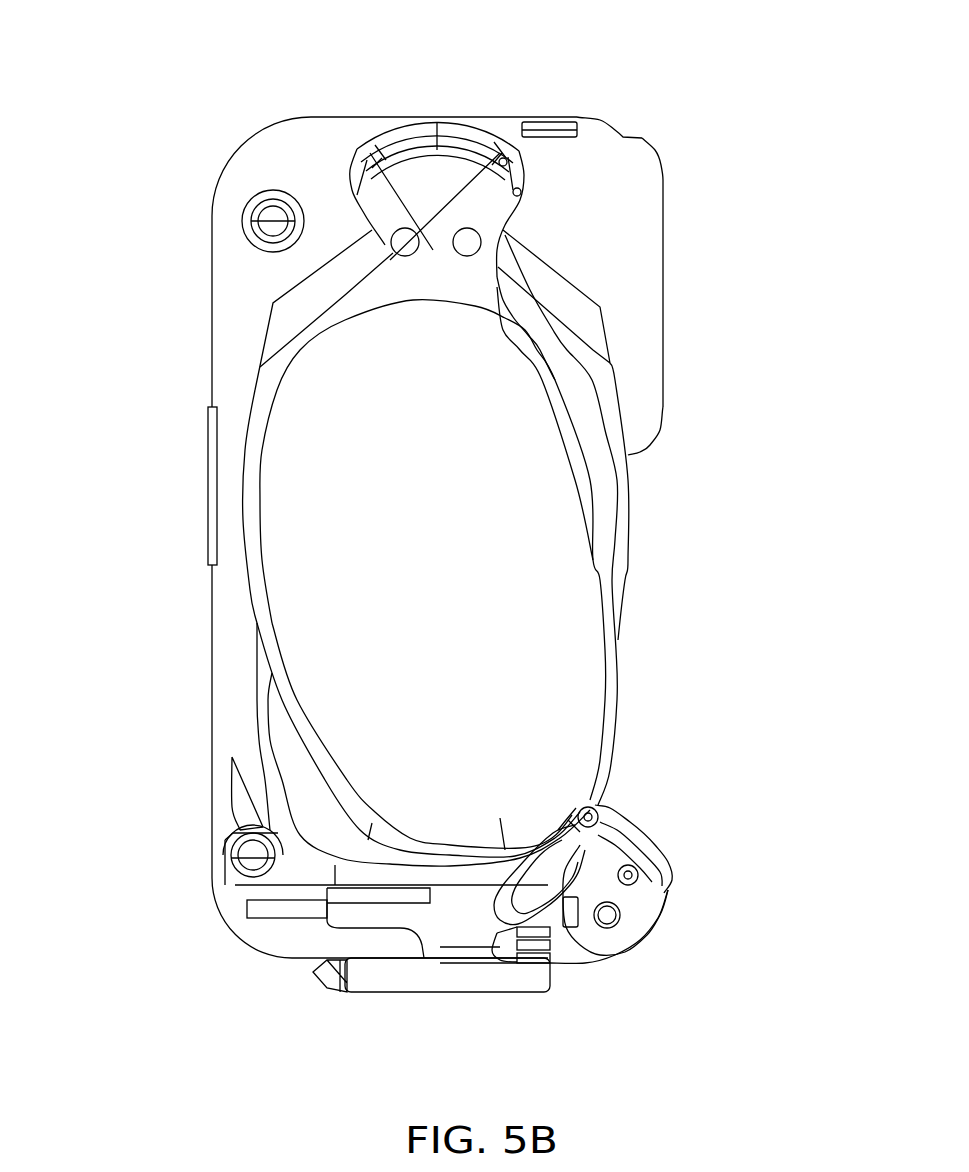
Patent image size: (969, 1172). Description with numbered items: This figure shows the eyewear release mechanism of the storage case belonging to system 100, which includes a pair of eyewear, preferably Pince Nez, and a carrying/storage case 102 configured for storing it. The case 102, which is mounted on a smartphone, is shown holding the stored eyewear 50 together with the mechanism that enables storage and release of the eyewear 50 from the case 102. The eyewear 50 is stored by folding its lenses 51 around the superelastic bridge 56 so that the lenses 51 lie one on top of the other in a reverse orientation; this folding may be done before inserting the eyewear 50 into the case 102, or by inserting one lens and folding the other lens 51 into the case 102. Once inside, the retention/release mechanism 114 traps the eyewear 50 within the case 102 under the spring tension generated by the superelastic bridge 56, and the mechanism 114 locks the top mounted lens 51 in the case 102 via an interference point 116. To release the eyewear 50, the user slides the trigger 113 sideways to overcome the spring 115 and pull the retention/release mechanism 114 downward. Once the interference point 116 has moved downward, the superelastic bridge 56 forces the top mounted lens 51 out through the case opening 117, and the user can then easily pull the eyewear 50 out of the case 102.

The system 100 is at (580, 31).
The eyewear 50 is at (473, 287).
The lens 51 is at (280, 623).
The superelastic bridge 56 is at (387, 135).
The carrying/storage case 102 is at (230, 335).
The trigger 113 is at (345, 985).
The retention/release mechanism 114 is at (580, 843).
The spring 115 is at (408, 880).
The interference point 116 is at (592, 814).
The case opening 117 is at (655, 543).